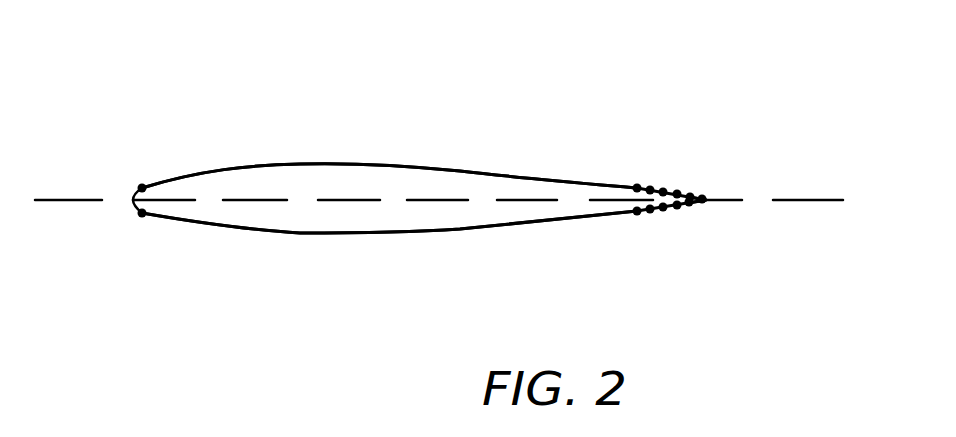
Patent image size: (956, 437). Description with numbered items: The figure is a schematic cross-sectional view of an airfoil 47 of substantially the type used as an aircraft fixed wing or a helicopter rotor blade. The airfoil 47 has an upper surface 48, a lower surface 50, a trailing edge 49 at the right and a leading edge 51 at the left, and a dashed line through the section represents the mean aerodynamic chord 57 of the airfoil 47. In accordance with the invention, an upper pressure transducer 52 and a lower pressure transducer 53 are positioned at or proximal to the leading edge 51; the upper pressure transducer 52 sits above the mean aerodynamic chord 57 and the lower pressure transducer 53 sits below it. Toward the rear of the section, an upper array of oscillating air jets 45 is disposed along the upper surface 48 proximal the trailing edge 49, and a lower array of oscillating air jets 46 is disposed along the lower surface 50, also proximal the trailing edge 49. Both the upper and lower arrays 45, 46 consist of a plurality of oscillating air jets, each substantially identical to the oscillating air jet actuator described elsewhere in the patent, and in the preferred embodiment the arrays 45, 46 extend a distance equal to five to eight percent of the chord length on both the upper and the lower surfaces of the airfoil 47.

The upper array of oscillating air jets 45 is at (653, 168).
The lower array of oscillating air jets 46 is at (675, 221).
The airfoil 47 is at (492, 129).
The upper surface 48 is at (550, 178).
The trailing edge 49 is at (718, 198).
The lower surface 50 is at (415, 232).
The leading edge 51 is at (133, 200).
The upper pressure transducer 52 is at (142, 187).
The lower pressure transducer 53 is at (142, 213).
The mean aerodynamic chord 57 is at (252, 202).